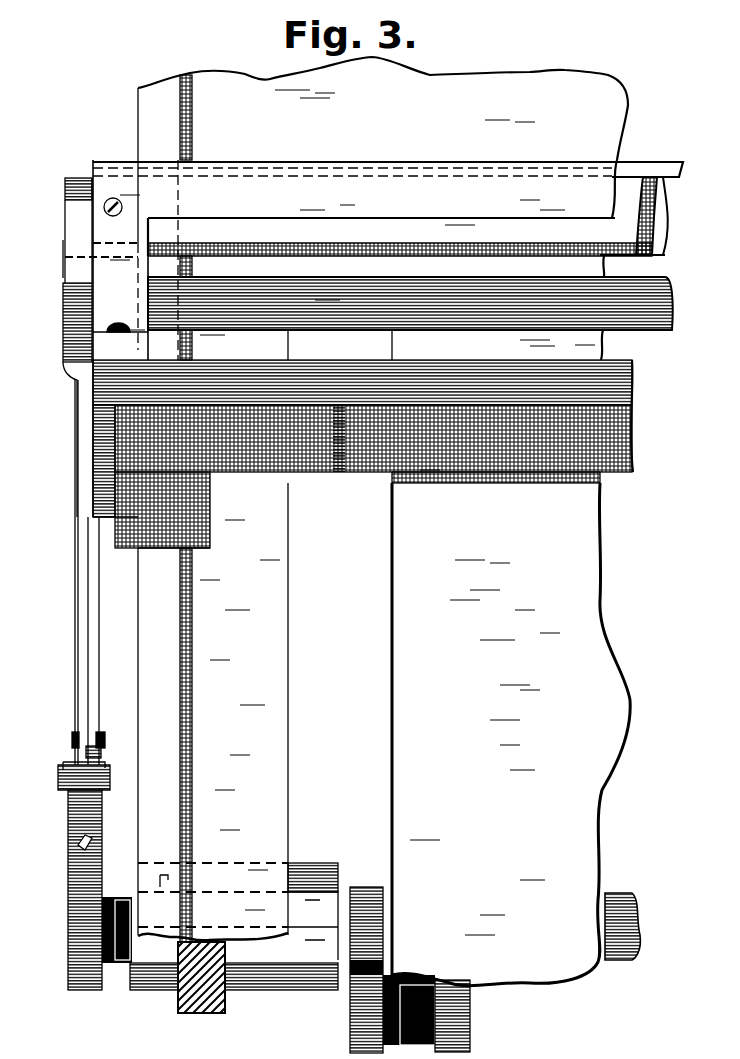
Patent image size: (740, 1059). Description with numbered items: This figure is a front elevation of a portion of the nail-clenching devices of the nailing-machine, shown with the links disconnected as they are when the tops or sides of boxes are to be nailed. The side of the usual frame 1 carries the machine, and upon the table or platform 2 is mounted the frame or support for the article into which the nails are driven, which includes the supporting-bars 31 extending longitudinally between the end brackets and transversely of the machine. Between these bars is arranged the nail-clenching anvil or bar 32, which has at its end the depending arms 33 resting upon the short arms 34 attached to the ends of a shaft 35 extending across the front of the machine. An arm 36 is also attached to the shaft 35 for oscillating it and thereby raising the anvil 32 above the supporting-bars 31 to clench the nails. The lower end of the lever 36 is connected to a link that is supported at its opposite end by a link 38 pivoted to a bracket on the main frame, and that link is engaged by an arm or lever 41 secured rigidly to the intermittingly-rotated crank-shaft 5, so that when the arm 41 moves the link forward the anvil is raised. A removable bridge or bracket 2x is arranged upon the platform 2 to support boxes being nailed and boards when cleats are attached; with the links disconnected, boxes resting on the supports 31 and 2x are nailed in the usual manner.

The side of the frame 1 is at (213, 508).
The table or platform 2 is at (636, 433).
The bridge or bracket 2x is at (400, 222).
The crank-shaft 5 is at (640, 908).
The supporting-bars 31 is at (680, 232).
The nail-clenching anvil or bar 32 is at (678, 163).
The depending arms 33 is at (77, 244).
The short arms 34 is at (65, 350).
The shaft 35 is at (674, 320).
The arm or lever 36 is at (78, 570).
The link 38 is at (99, 628).
The arm or lever 41 is at (68, 838).